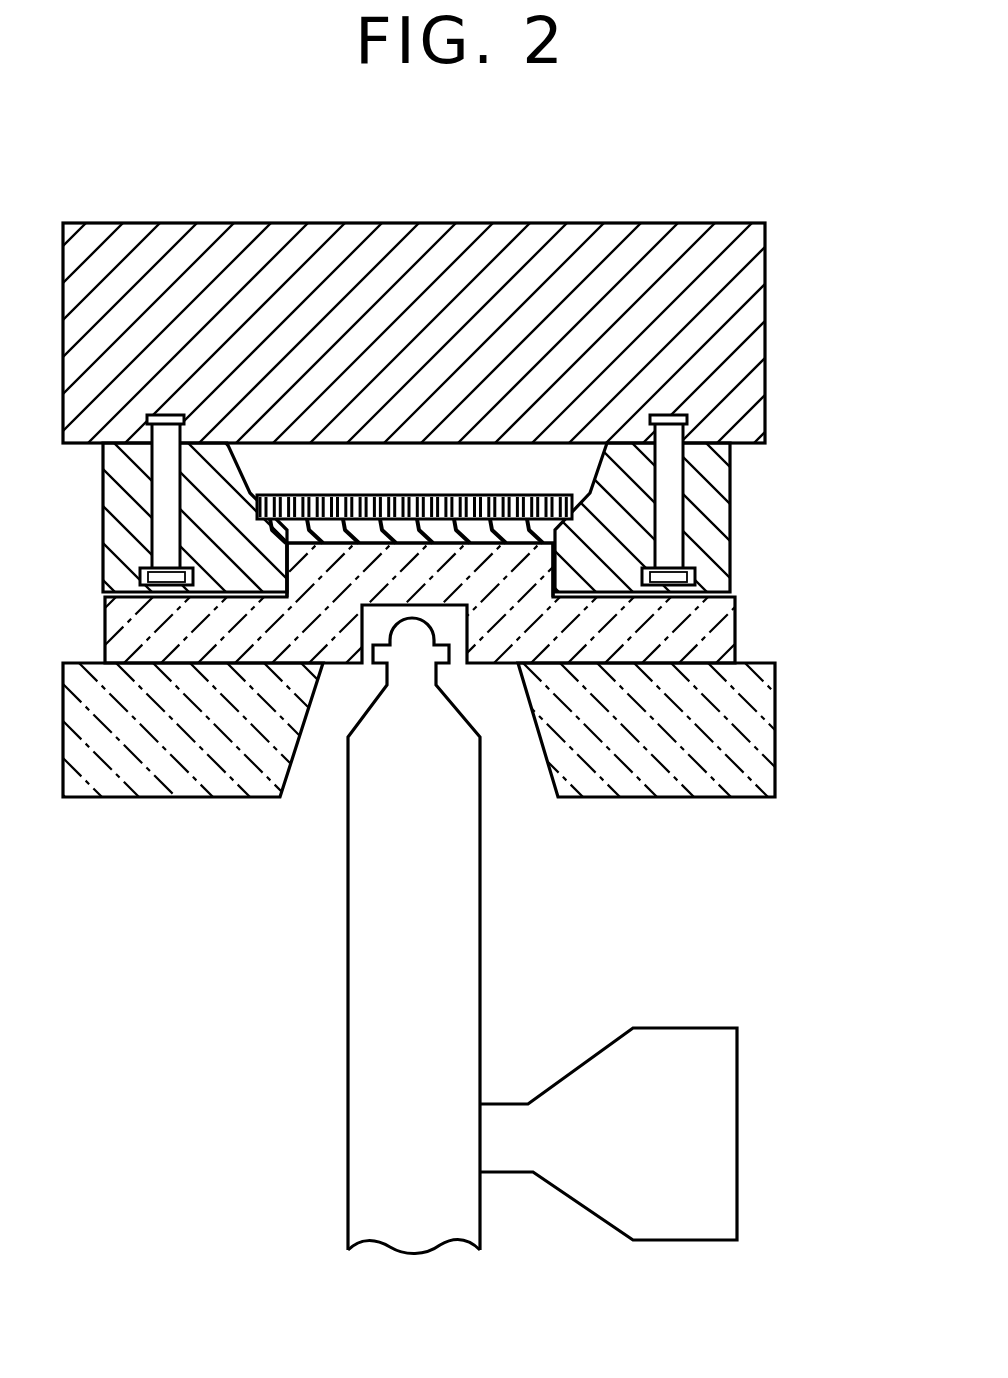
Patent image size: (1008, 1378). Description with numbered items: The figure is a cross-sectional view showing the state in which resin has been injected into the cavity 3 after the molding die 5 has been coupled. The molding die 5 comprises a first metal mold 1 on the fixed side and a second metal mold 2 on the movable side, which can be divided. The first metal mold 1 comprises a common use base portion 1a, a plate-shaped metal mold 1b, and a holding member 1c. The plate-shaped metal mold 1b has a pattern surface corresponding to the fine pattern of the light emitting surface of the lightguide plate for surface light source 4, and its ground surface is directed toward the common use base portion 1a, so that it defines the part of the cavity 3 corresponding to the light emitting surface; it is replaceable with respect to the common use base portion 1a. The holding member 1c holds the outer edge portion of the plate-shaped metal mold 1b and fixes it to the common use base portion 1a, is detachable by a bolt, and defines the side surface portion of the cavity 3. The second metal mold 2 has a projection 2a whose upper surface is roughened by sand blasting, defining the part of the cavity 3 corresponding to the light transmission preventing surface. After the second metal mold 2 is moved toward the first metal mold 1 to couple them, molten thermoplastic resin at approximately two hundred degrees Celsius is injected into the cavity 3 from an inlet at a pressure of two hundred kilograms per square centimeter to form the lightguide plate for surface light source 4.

The first metal mold 1 is at (838, 313).
The common use base portion 1a is at (743, 336).
The plate-shaped metal mold 1b is at (583, 500).
The holding member 1c is at (731, 508).
The second metal mold 2 is at (736, 628).
The projection 2a is at (345, 545).
The cavity 3 is at (645, 852).
The lightguide plate for surface light source 4 is at (487, 532).
The molding die 5 is at (630, 210).